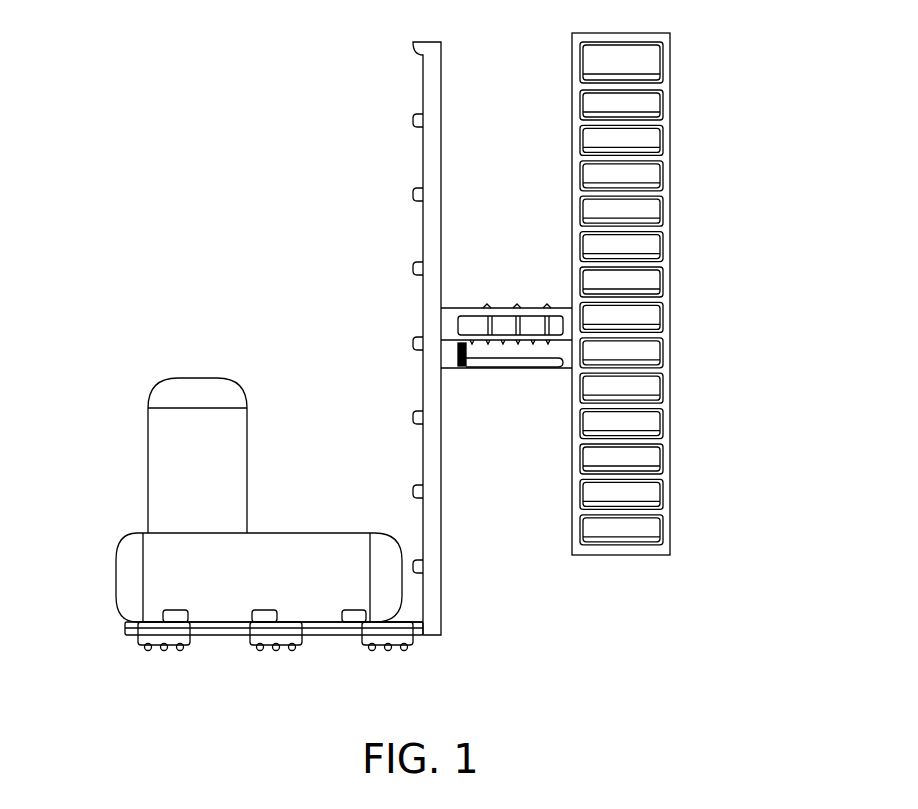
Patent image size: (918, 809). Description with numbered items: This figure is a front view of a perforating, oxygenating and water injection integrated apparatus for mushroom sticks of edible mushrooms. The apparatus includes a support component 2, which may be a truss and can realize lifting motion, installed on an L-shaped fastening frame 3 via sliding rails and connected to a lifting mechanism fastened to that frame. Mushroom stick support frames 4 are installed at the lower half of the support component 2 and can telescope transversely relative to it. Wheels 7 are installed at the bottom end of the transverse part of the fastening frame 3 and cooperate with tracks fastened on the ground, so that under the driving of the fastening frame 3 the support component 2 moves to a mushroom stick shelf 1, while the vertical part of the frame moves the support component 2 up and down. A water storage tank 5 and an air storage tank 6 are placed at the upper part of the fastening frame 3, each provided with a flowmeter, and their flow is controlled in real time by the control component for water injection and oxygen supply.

The mushroom stick shelf 1 is at (672, 37).
The support component 2 is at (503, 313).
The fastening frame 3 is at (413, 47).
The mushroom stick support frame 4 is at (505, 366).
The water storage tank 5 is at (150, 427).
The air storage tank 6 is at (160, 578).
The wheel 7 is at (385, 637).